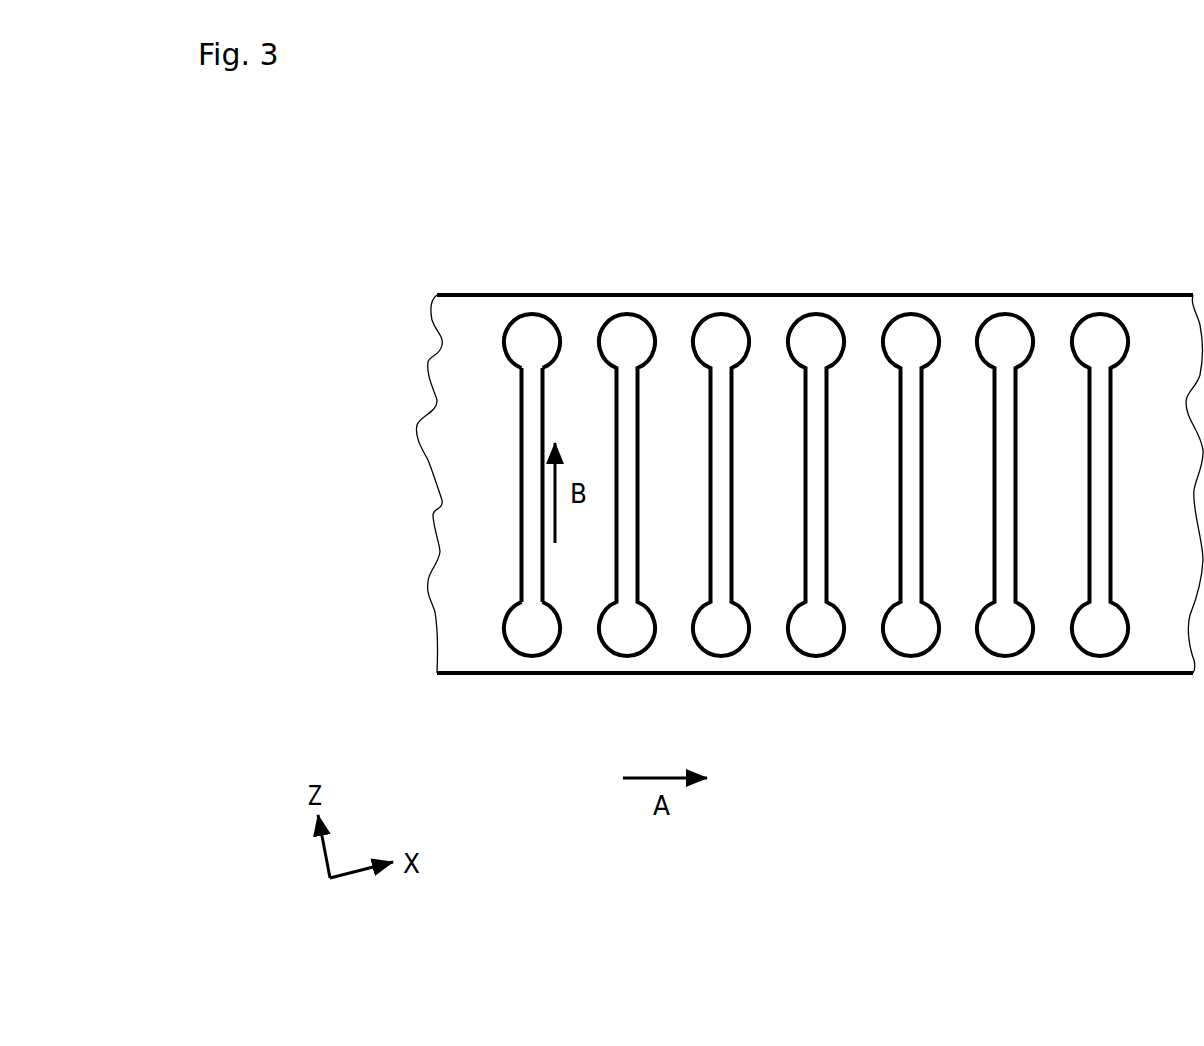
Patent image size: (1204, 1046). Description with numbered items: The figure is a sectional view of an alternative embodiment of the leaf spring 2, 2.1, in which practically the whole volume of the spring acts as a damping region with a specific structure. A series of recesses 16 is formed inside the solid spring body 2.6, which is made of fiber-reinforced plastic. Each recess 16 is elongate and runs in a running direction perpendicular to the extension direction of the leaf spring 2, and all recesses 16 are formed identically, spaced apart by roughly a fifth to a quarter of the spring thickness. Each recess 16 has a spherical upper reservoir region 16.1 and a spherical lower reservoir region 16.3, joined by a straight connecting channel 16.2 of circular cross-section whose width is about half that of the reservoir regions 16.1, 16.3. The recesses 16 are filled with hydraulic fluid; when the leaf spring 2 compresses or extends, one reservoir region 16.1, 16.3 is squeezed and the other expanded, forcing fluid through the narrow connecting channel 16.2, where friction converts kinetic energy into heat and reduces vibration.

The leaf spring 2 is at (809, 436).
The rotor ring / rotor body 2.1 is at (809, 542).
The spring body 2.6 is at (1058, 660).
The recess 16 is at (739, 457).
The upper reservoir region 16.1 is at (505, 327).
The connecting channel 16.2 is at (520, 458).
The lower reservoir region 16.3 is at (508, 648).